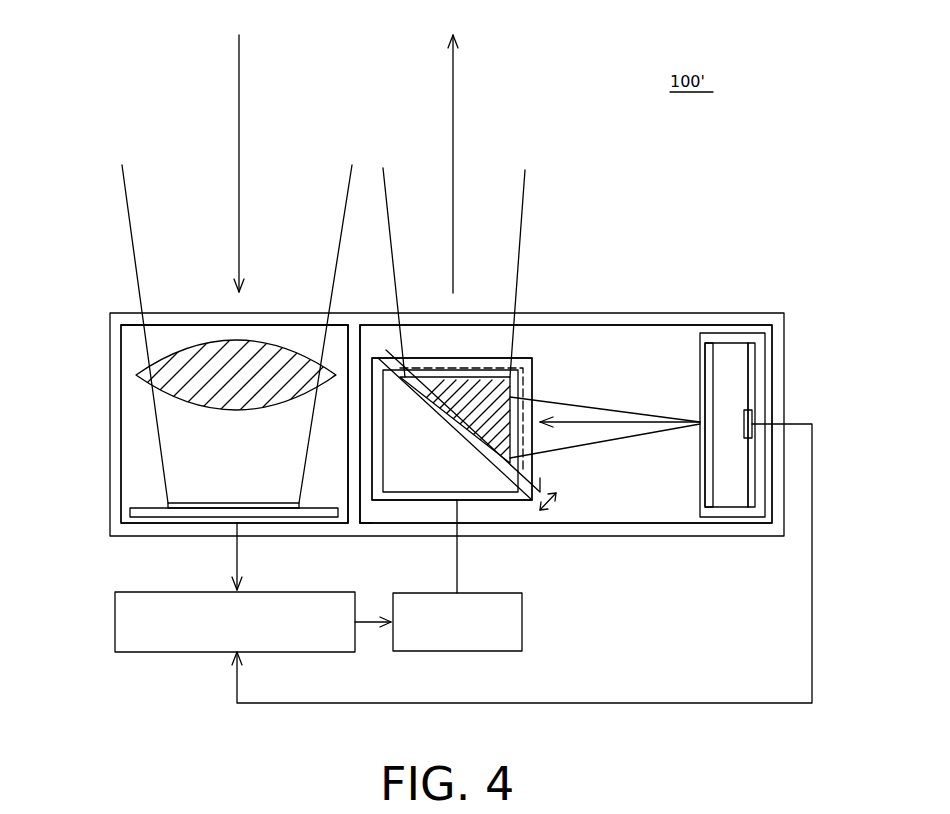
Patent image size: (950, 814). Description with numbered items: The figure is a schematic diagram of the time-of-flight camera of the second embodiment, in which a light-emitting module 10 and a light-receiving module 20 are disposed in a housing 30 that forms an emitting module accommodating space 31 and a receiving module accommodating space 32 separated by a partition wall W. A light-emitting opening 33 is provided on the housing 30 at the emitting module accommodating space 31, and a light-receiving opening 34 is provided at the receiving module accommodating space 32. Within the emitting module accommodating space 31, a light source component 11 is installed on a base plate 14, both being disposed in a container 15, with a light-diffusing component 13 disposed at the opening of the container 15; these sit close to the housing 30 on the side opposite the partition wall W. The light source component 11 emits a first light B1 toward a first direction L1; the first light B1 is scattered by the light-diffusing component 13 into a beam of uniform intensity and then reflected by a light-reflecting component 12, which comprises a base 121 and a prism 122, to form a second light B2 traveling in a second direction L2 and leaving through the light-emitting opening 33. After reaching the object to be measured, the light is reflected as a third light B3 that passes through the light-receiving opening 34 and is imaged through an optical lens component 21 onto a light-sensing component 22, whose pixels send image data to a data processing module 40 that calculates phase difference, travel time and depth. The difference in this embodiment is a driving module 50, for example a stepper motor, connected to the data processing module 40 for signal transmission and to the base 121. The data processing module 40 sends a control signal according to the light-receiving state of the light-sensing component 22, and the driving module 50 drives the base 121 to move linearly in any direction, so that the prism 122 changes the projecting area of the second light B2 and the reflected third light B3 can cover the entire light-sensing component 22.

The light-emitting module 10 is at (633, 302).
The light source component 11 is at (745, 410).
The light-reflecting component 12 is at (628, 568).
The base 121 is at (497, 485).
The prism 122 is at (540, 478).
The light-diffusing component 13 is at (700, 460).
The base plate 14 is at (752, 375).
The container 15 is at (725, 517).
The light-receiving module 20 is at (158, 455).
The optical lens component 21 is at (180, 371).
The light-sensing component 22 is at (237, 505).
The housing 30 is at (785, 335).
The emitting module accommodating space 31 is at (667, 337).
The receiving module accommodating space 32 is at (135, 345).
The light-emitting opening 33 is at (560, 313).
The light-receiving opening 34 is at (130, 318).
The data processing module 40 is at (115, 620).
The driving module 50 is at (522, 620).
The partition wall W is at (362, 508).
The first light B1 is at (550, 400).
The second light B2 is at (523, 208).
The third light B3 is at (123, 198).
The first direction L1 is at (612, 420).
The second direction L2 is at (455, 163).